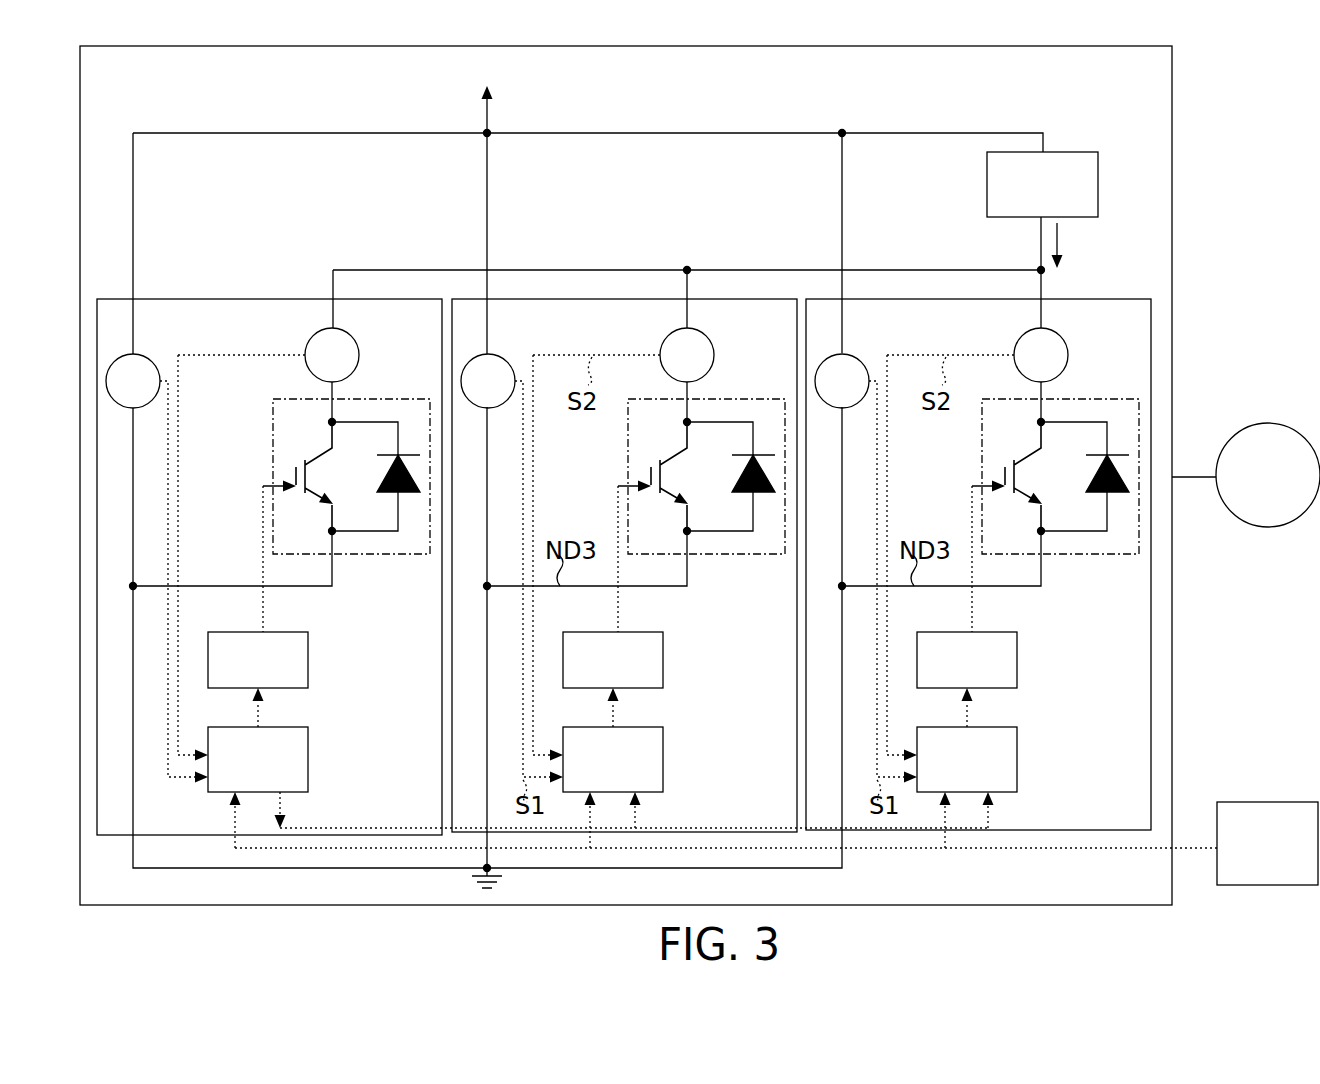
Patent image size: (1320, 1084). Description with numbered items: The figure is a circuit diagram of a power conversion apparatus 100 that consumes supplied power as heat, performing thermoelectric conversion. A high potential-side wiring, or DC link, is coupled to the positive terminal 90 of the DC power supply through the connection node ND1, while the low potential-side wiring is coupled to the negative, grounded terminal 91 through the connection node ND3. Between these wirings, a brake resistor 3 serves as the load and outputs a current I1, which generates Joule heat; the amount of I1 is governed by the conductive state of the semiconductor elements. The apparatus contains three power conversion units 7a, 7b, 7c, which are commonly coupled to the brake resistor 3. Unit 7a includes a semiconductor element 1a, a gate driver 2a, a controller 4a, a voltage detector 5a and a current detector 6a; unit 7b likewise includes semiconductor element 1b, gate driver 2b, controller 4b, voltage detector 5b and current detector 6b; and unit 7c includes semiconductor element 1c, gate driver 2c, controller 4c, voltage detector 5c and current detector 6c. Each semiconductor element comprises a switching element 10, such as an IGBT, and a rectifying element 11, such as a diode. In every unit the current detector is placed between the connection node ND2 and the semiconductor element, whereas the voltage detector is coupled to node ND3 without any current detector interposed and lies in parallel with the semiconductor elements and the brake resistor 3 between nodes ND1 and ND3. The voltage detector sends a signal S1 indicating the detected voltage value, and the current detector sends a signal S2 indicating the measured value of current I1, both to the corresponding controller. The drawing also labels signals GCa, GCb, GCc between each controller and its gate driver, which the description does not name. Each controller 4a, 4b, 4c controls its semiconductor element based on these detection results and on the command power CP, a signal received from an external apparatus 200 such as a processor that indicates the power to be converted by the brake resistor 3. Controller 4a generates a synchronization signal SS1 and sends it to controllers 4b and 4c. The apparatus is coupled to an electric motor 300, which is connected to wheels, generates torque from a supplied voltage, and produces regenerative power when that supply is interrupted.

The power conversion apparatus 100 is at (1172, 160).
The external apparatus 200 is at (1270, 802).
The electric motor 300 is at (1268, 423).
The brake resistor 3 is at (987, 180).
The positive terminal 90 is at (474, 96).
The negative terminal 91 is at (464, 884).
The power conversion unit 7a is at (250, 299).
The power conversion unit 7b is at (624, 551).
The power conversion unit 7c is at (978, 539).
The voltage detector 5a is at (152, 361).
The voltage detector 5b is at (509, 362).
The voltage detector 5c is at (862, 362).
The current detector 6a is at (352, 337).
The current detector 6b is at (712, 342).
The current detector 6c is at (1064, 342).
The semiconductor element 1a is at (418, 399).
The semiconductor element 1b is at (706, 450).
The semiconductor element 1c is at (1060, 450).
The switching element 10 is at (292, 458).
The rectifying element 11 is at (368, 476).
The gate driver 2a is at (308, 638).
The gate driver 2b is at (647, 587).
The gate driver 2c is at (999, 587).
The controller 4a is at (308, 744).
The controller 4b is at (644, 757).
The controller 4c is at (997, 757).
The connection node ND1 is at (705, 133).
The connection node ND2 is at (897, 270).
The connection node ND3 is at (205, 586).
The signal S1 is at (170, 780).
The signal S2 is at (237, 357).
The synchronization signal SS1 is at (396, 828).
The gate control signal a GCa is at (262, 718).
The gate control signal b GCb is at (652, 707).
The gate control signal c GCc is at (1005, 707).
The command power CP is at (1077, 848).
The current I1 is at (1062, 240).